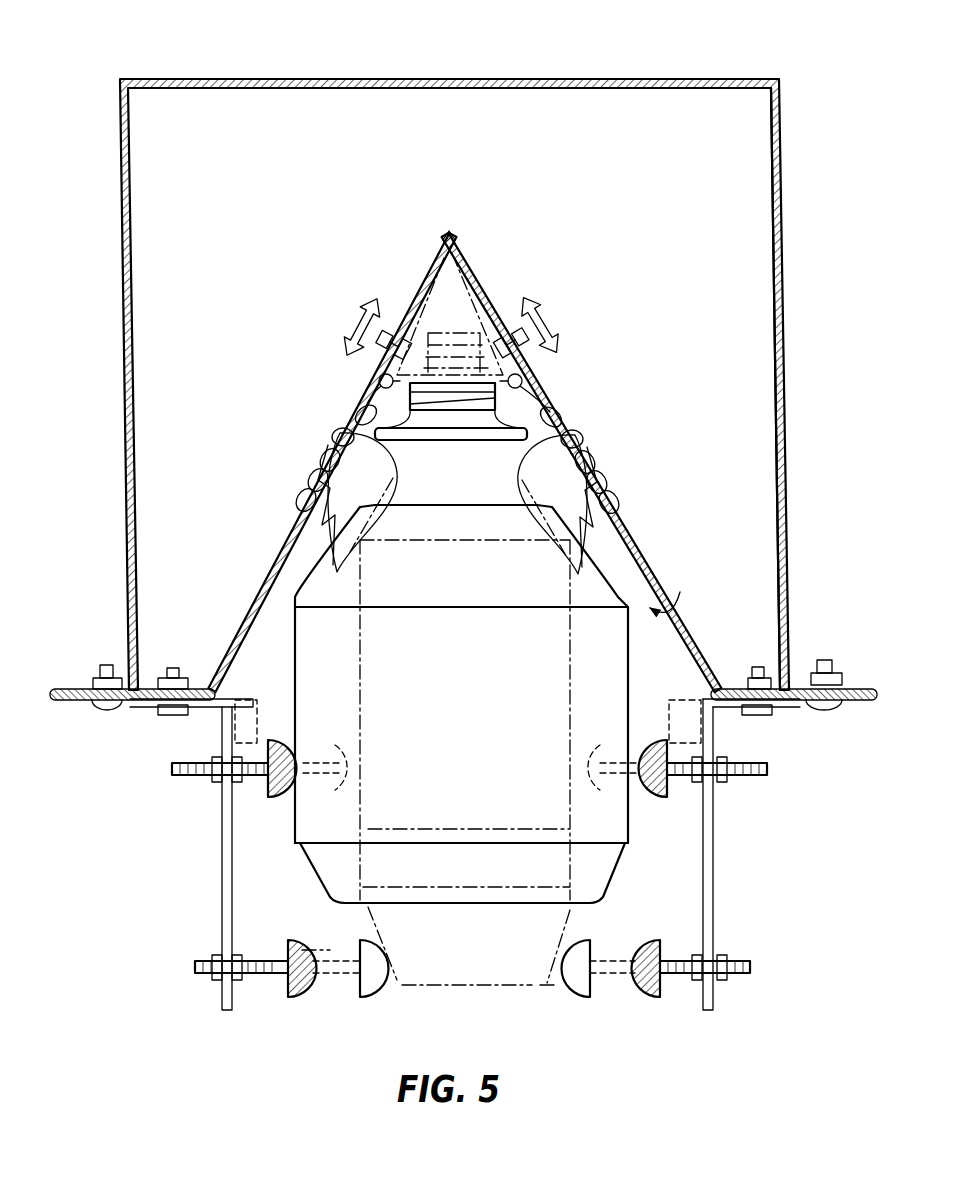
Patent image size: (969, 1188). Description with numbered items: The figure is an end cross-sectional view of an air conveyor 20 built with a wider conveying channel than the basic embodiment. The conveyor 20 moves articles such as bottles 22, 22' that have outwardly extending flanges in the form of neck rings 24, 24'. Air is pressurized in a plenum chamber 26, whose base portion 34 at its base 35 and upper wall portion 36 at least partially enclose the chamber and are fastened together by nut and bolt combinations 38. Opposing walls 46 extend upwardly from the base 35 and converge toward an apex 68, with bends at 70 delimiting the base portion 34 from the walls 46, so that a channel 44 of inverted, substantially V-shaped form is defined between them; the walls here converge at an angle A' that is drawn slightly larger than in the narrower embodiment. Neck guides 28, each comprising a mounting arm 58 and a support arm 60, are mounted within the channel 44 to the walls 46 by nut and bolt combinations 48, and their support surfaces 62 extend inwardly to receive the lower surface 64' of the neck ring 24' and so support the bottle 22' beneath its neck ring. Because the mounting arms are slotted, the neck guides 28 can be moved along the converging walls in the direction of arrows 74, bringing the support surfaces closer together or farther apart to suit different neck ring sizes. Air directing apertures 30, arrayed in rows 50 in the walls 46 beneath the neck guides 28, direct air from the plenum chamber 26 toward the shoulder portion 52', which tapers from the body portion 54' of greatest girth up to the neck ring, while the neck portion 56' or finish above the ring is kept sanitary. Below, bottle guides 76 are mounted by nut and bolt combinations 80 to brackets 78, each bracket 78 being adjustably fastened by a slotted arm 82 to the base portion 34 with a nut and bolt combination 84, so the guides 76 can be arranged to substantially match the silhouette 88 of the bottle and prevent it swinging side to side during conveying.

The air conveyor 20 is at (472, 358).
The bottle 22 is at (436, 974).
The bottle 22' is at (440, 704).
The neck ring 24 is at (456, 332).
The neck ring 24' is at (452, 428).
The plenum chamber 26 is at (472, 384).
The neck guide 28 is at (380, 381).
The aperture 30 is at (461, 519).
The base portion 34 is at (172, 668).
The base 35 is at (128, 705).
The upper wall portion 36 is at (792, 485).
The nut and bolt combination 38 is at (105, 665).
The channel 44 is at (673, 587).
The wall 46 is at (268, 590).
The nut and bolt combination 48 is at (390, 333).
The row of apertures 50 is at (300, 480).
The shoulder portion 52' is at (461, 674).
The body portion 54' is at (306, 675).
The neck portion 56' is at (563, 398).
The mounting arm 58 is at (356, 415).
The support arm 60 is at (332, 437).
The support surface 62 is at (457, 503).
The lower surface of neck ring 64' is at (451, 463).
The apex 68 is at (450, 233).
The bend 70 is at (465, 821).
The arrow 74 is at (350, 320).
The bottle guide 76 is at (272, 797).
The bracket 78 is at (222, 868).
The nut and bolt combination 80 is at (220, 780).
The slotted arm 82 is at (205, 707).
The nut and bolt combination 84 is at (165, 712).
The silhouette 88 is at (578, 692).
The angle A' is at (457, 300).